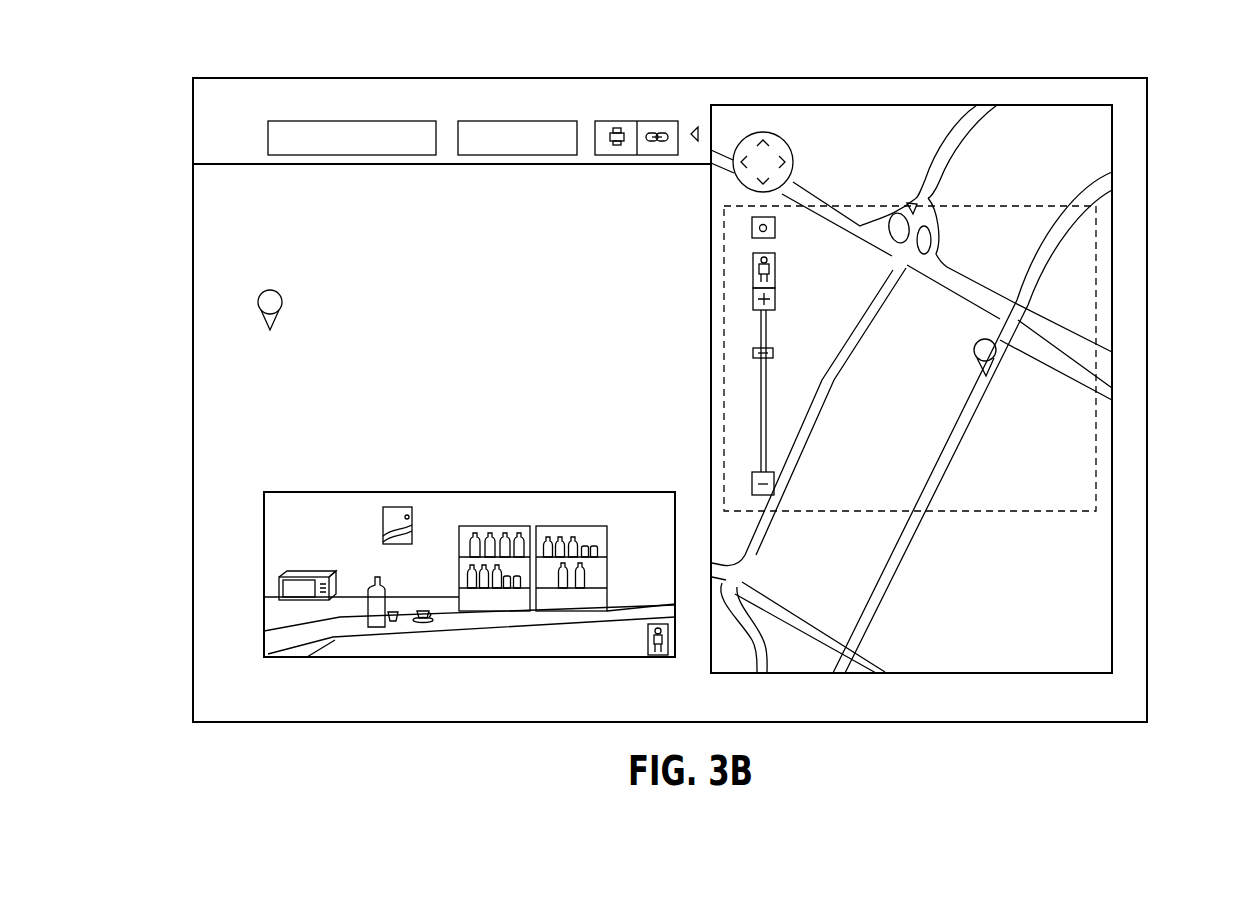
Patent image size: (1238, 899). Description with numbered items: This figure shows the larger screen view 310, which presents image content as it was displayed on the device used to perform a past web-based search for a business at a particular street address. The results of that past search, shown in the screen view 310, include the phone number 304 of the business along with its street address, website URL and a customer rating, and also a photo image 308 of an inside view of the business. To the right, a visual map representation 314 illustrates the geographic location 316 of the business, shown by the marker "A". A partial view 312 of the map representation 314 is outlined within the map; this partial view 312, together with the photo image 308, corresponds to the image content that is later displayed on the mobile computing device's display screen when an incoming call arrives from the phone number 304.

The larger screen view 310 is at (497, 78).
The phone number 304 is at (292, 350).
The photo image 308 is at (264, 587).
The visual map representation 314 is at (1097, 155).
The partial view 312 is at (1100, 262).
The geographic location of the business 316 is at (987, 377).